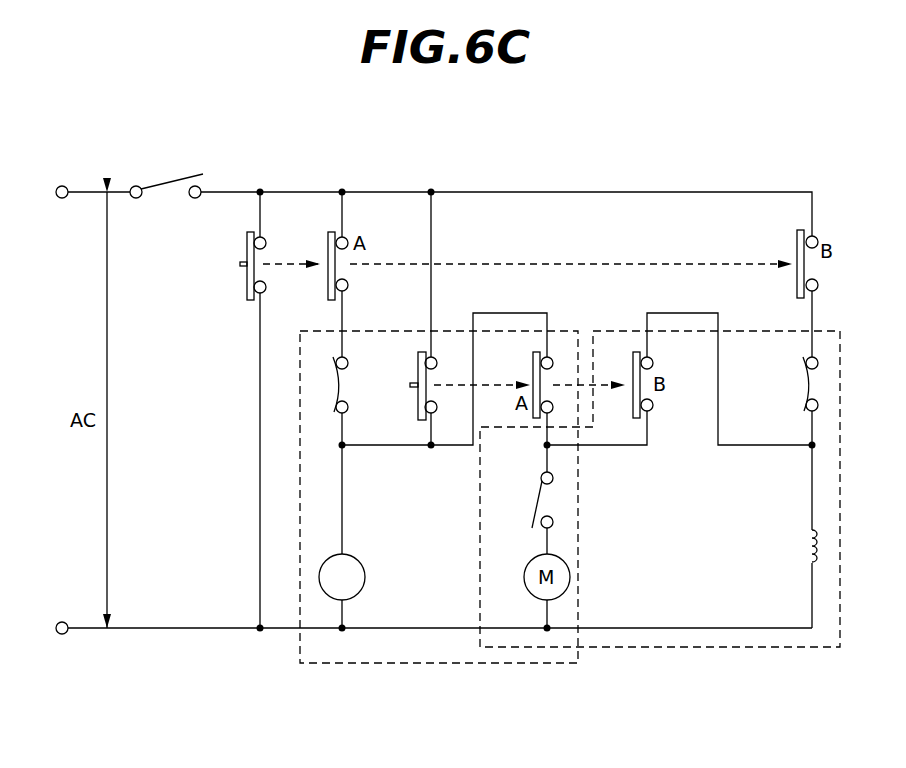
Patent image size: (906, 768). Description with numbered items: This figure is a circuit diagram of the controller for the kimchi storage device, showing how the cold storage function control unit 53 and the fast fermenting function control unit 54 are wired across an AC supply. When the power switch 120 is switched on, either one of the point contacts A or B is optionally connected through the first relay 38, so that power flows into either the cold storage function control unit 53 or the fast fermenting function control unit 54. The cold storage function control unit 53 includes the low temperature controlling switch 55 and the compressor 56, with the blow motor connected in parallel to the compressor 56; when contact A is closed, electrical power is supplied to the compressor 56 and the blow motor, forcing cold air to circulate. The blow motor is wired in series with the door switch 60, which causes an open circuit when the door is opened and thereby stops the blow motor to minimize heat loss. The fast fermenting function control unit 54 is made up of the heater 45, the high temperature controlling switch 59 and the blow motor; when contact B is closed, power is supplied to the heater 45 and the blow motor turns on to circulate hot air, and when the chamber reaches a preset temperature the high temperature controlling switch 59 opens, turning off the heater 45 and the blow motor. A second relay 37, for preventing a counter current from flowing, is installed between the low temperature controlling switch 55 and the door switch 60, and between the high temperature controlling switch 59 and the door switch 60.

The power switch 120 is at (170, 178).
The first relay 38 is at (239, 266).
The second relay 37 is at (411, 384).
The low temperature controlling switch 55 is at (352, 385).
The compressor 56 is at (363, 561).
The door switch 60 is at (534, 498).
The high temperature controlling switch 59 is at (794, 384).
The heater 45 is at (790, 546).
The cold storage function control unit 53 is at (425, 663).
The fast fermenting function control unit 54 is at (728, 647).